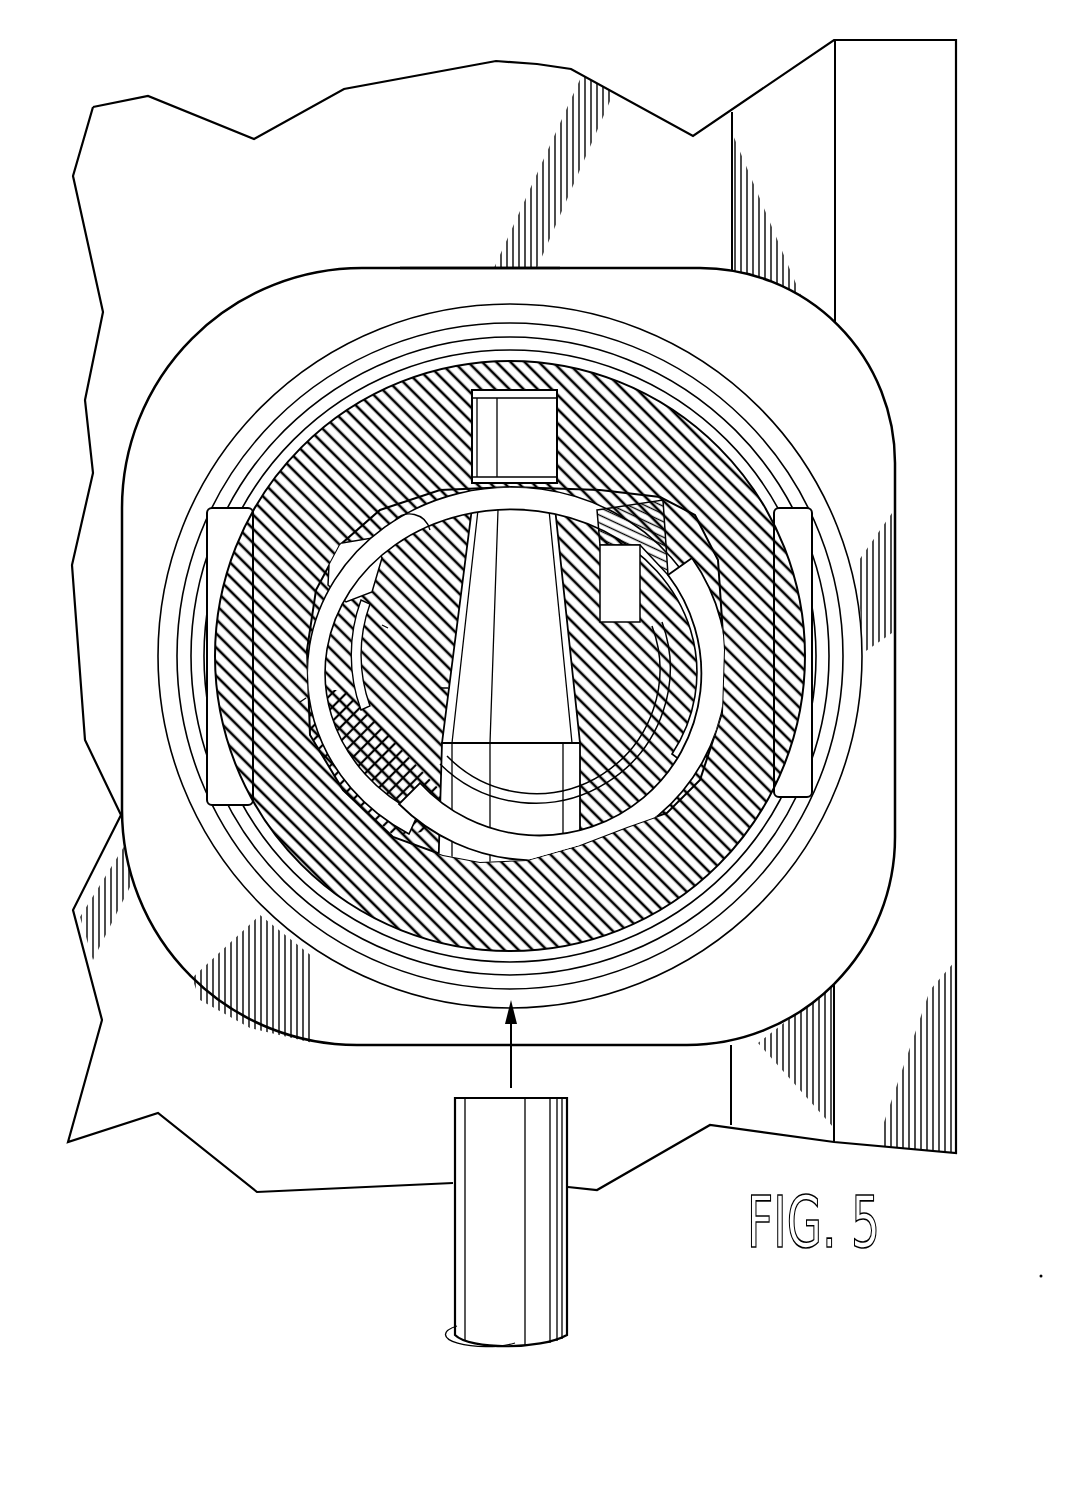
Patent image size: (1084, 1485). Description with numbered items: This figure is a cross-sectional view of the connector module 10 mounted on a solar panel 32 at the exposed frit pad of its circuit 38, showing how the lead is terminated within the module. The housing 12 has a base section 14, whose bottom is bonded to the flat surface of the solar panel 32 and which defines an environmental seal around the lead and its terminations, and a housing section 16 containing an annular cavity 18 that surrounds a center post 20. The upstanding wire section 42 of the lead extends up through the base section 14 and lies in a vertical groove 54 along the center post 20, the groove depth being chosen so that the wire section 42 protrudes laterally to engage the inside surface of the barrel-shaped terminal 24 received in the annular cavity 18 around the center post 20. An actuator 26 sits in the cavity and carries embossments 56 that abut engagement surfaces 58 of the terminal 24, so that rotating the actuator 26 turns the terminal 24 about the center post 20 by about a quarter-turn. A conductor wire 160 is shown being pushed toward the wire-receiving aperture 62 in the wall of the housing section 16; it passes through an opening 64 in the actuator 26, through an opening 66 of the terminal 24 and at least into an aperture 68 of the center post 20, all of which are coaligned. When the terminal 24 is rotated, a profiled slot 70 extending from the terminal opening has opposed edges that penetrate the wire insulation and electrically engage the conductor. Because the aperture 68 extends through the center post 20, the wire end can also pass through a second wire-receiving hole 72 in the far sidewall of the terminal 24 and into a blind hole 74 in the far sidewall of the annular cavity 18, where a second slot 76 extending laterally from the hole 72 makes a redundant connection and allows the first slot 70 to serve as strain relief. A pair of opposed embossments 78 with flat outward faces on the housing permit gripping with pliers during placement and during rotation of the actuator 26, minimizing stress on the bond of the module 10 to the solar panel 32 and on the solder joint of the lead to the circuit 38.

The connector module 10 is at (265, 251).
The housing 12 is at (357, 252).
The base section 14 is at (443, 292).
The housing section 16 is at (350, 341).
The annular cavity 18 is at (322, 575).
The center post 20 is at (382, 626).
The terminal 24 is at (356, 673).
The actuator 26 is at (300, 702).
The solar panel 32 is at (541, 45).
The circuit 38 is at (775, 122).
The wire section 42 is at (583, 740).
The groove 54 is at (600, 669).
The embossments 56 is at (443, 693).
The engagement surfaces 58 is at (440, 657).
The wire-receiving aperture 62 is at (458, 941).
The opening 64 is at (458, 841).
The opening 66 is at (476, 796).
The aperture 68 is at (470, 745).
The profiled slot 70 is at (638, 749).
The second wire-receiving hole 72 is at (556, 509).
The blind hole 74 is at (560, 410).
The second slot 76 is at (415, 551).
The embossments 78 is at (800, 522).
The rod 160 is at (493, 1254).